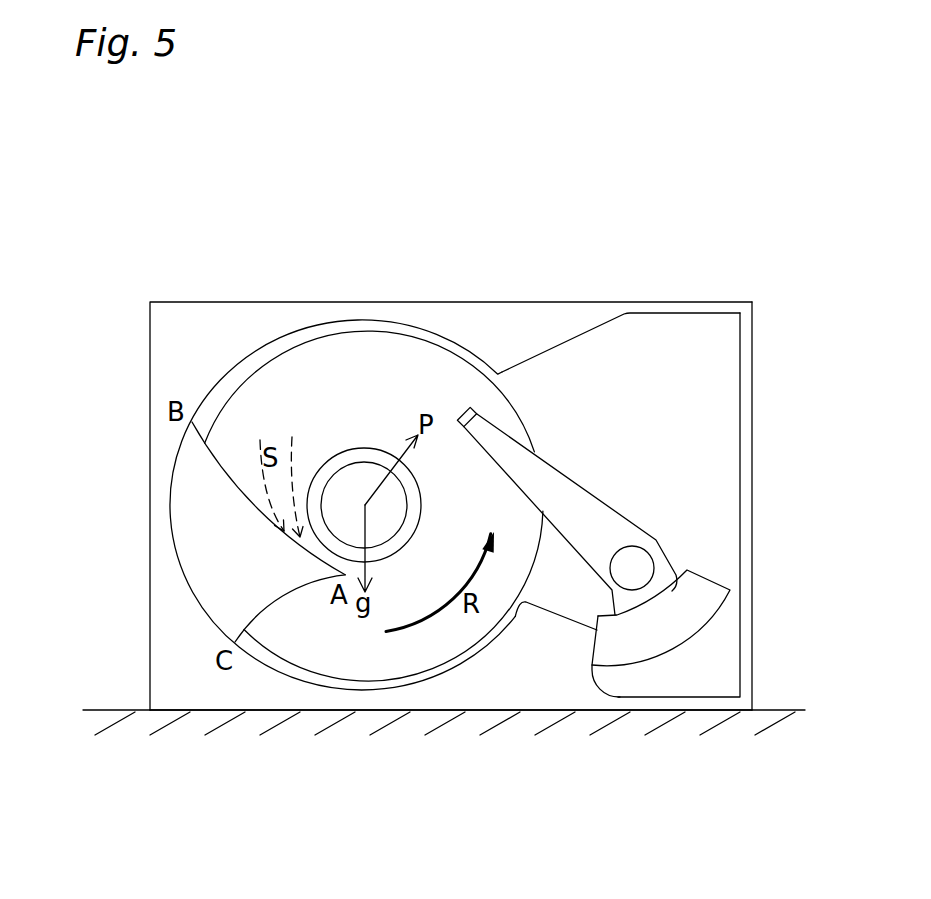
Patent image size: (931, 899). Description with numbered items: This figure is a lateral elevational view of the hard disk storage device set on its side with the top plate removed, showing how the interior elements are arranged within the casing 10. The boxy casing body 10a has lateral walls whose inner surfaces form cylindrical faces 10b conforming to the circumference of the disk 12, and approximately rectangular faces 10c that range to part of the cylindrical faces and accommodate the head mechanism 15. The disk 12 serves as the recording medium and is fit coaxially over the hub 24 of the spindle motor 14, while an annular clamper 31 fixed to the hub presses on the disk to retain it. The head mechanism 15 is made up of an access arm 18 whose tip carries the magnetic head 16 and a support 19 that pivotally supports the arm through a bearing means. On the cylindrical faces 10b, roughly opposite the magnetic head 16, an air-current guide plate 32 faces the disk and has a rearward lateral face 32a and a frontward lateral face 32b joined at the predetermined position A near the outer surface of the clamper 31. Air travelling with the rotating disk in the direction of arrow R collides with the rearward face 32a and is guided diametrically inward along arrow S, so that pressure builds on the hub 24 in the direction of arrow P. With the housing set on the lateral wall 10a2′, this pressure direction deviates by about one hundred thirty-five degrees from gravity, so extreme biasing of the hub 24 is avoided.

The casing 10 is at (586, 284).
The casing body 10a is at (622, 313).
The cylindrical faces 10b is at (198, 410).
The approximately rectangular faces 10c is at (730, 358).
The lateral wall 10a2′ is at (523, 712).
The disk 12 is at (383, 358).
The spindle motor 14 is at (399, 486).
The head mechanism 15 is at (629, 588).
The magnetic head 16 is at (477, 410).
The access arm 18 is at (605, 522).
The support 19 is at (665, 635).
The hub 24 is at (390, 503).
The clamper 31 is at (391, 542).
The air-current guide plate 32 is at (207, 524).
The rearward lateral face 32a is at (214, 448).
The frontward lateral face 32b is at (274, 608).